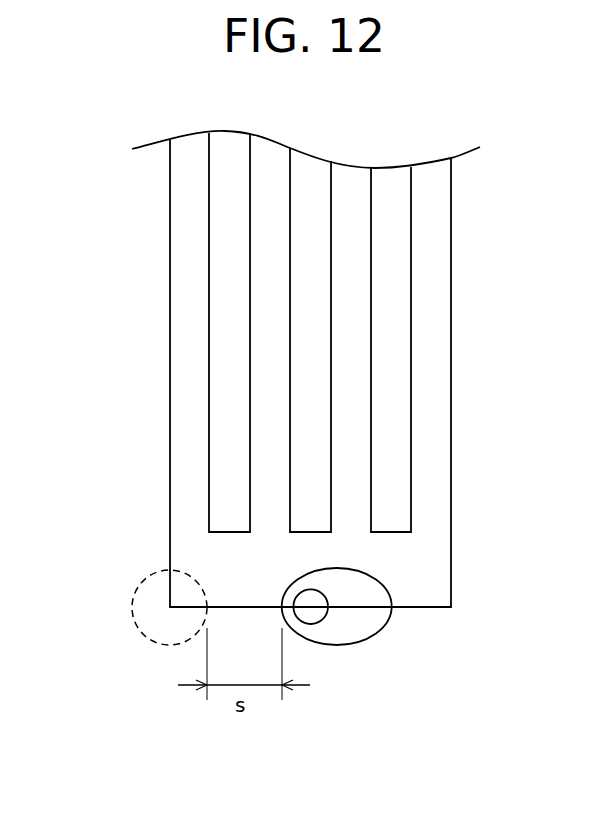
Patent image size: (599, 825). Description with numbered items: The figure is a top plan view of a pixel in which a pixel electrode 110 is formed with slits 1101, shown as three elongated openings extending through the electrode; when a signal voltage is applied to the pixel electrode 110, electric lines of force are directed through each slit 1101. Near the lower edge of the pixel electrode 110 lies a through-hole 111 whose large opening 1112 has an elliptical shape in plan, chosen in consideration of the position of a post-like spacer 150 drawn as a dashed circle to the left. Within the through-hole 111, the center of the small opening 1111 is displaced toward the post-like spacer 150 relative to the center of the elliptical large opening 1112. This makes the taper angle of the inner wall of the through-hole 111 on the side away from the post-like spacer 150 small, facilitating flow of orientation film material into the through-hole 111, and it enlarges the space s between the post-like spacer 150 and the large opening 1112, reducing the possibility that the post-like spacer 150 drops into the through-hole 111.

The pixel electrode 110 is at (340, 369).
The slit 1101 is at (392, 322).
The through-hole 111 is at (369, 678).
The small opening 1111 is at (332, 665).
The large opening 1112 is at (357, 645).
The post-like spacer 150 is at (133, 608).